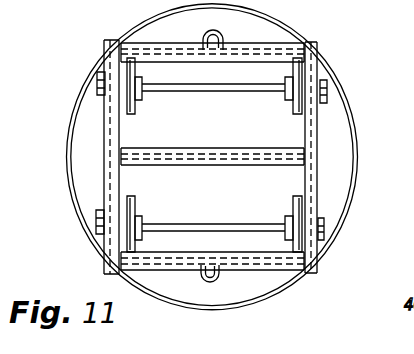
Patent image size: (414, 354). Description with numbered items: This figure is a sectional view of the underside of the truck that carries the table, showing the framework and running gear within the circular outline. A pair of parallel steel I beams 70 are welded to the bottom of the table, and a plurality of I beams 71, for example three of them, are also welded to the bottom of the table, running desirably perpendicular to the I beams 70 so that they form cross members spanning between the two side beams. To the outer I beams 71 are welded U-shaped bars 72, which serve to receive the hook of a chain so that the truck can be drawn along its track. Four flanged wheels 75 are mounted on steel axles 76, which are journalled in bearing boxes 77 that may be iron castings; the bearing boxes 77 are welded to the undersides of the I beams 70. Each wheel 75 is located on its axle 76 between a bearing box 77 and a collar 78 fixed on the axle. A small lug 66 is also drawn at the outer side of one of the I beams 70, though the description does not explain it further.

The mounting lug 66 is at (97, 81).
The parallel steel I beams 70 is at (105, 180).
The I beams 71 is at (252, 50).
The U-shaped bars 72 is at (201, 41).
The flanged wheels 75 is at (137, 73).
The steel axles 76 is at (198, 91).
The bearing boxes 77 is at (100, 233).
The collars 78 is at (141, 97).